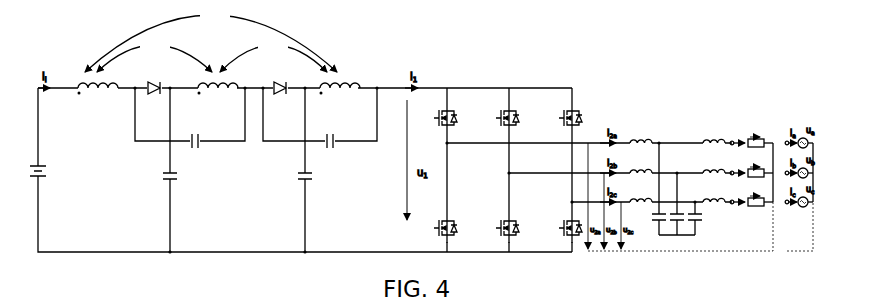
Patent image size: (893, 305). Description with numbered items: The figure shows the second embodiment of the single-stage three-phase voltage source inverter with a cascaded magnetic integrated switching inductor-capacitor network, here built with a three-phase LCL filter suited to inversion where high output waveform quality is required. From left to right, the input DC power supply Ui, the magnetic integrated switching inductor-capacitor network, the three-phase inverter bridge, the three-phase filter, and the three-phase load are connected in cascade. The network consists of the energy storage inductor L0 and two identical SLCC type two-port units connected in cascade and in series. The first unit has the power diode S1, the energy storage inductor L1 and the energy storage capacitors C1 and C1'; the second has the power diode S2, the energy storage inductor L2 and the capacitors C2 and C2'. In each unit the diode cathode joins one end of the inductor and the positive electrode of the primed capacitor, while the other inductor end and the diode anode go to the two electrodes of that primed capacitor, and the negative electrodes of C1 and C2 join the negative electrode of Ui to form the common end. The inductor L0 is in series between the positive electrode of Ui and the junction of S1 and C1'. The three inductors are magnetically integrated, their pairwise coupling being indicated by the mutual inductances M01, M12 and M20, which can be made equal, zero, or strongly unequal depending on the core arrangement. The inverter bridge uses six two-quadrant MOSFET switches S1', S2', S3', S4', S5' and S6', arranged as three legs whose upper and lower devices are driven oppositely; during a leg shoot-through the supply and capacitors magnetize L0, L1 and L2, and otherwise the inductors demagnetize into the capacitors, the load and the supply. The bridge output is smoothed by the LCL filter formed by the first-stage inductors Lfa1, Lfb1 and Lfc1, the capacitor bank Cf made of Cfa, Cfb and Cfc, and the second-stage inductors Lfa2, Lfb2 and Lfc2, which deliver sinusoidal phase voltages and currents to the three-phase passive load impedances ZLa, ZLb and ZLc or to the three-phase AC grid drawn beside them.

The input DC power supply Ui is at (30, 171).
The energy storage inductor L0 is at (98, 95).
The energy storage inductor L1 is at (218, 95).
The energy storage inductor L2 is at (340, 95).
The power diode S1 is at (154, 78).
The power diode S2 is at (280, 78).
The energy storage capacitor C1 is at (164, 170).
The energy storage capacitor C2 is at (299, 170).
The energy storage capacitor C1' is at (190, 118).
The energy storage capacitor C2' is at (320, 118).
The mutual inductance M01 is at (154, 55).
The mutual inductance M12 is at (273, 55).
The mutual inductance M20 is at (211, 40).
The inverter switch S1' is at (436, 118).
The inverter switch S2' is at (561, 228).
The inverter switch S3' is at (498, 118).
The inverter switch S4' is at (436, 228).
The inverter switch S5' is at (561, 118).
The inverter switch S6' is at (498, 228).
The filter inductor phase a 1 Lfa1 is at (641, 135).
The filter inductor phase b 1 Lfb1 is at (641, 165).
The filter inductor phase c 1 Lfc1 is at (641, 194).
The filter inductor phase a 2 Lfa2 is at (714, 135).
The filter inductor phase b 2 Lfb2 is at (714, 165).
The filter inductor phase c 2 Lfc2 is at (714, 194).
The filter capacitor bank Cf is at (670, 189).
The filter capacitor phase a Cfa is at (652, 189).
The filter capacitor phase b Cfb is at (677, 204).
The filter capacitor phase c Cfc is at (693, 218).
The three-phase output impedance of passive load ZLa is at (752, 144).
The three-phase output impedance of passive load ZLb is at (752, 174).
The three-phase output impedance of passive load ZLc is at (752, 203).